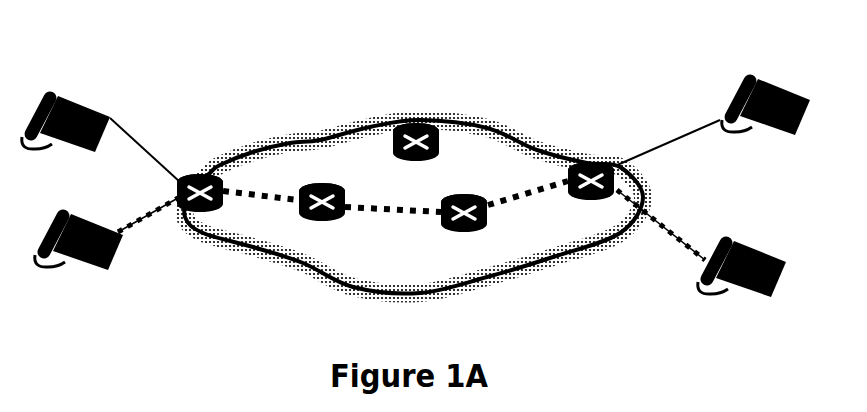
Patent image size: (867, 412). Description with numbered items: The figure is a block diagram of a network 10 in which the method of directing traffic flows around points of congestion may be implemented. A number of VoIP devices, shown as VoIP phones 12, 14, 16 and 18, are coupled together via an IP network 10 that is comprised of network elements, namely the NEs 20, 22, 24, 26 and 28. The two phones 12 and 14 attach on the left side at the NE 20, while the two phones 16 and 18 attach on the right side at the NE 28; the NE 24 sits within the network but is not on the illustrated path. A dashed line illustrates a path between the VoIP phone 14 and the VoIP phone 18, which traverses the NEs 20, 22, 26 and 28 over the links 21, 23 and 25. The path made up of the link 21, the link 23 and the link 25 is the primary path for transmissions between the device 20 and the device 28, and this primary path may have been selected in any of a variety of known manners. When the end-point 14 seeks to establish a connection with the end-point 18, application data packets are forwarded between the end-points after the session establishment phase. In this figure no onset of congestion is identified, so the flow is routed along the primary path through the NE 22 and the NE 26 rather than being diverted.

The network 10 is at (290, 58).
The VoIP phone 12 is at (67, 100).
The VoIP phone 14 is at (77, 227).
The VoIP phone 16 is at (750, 82).
The VoIP phone 18 is at (748, 248).
The network element 20 is at (195, 172).
The link 21 is at (268, 198).
The network element 22 is at (295, 178).
The link 23 is at (405, 212).
The network element 24 is at (413, 123).
The link 25 is at (547, 188).
The network element 26 is at (476, 193).
The network element 28 is at (595, 162).